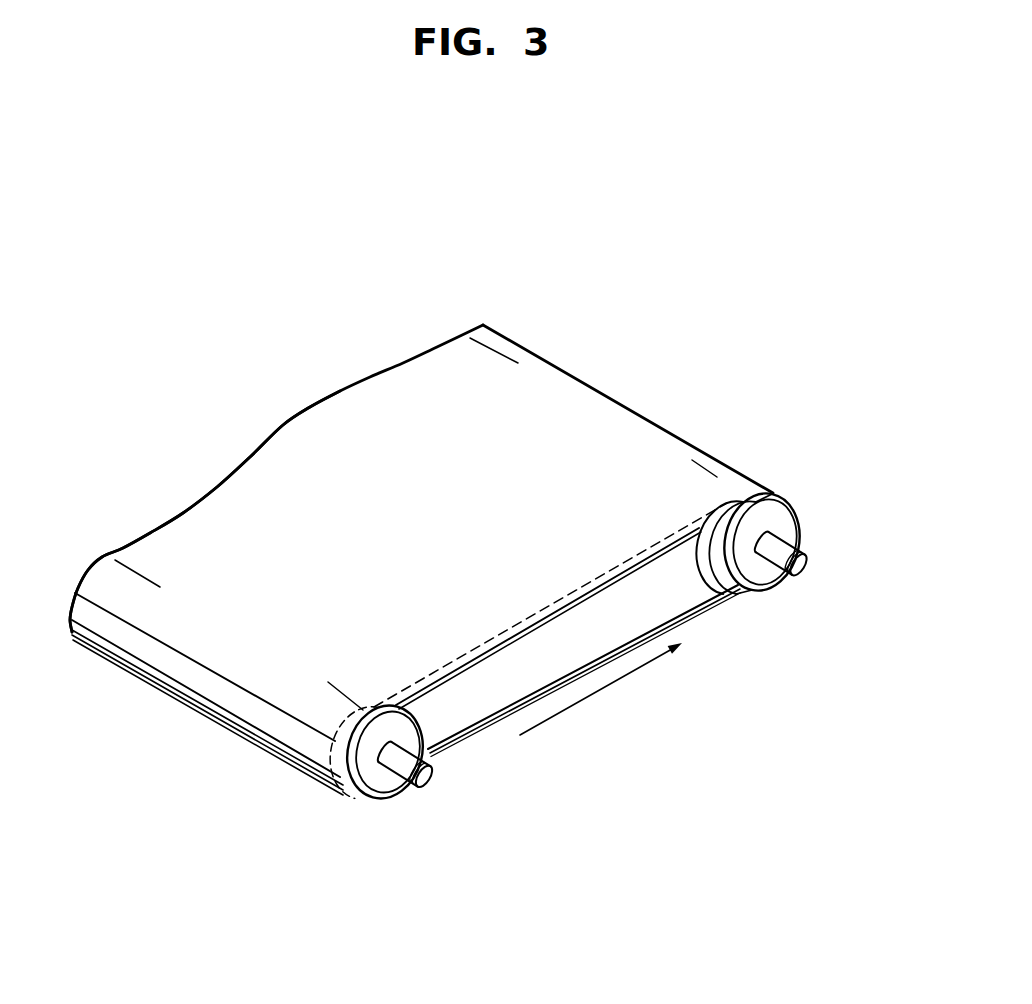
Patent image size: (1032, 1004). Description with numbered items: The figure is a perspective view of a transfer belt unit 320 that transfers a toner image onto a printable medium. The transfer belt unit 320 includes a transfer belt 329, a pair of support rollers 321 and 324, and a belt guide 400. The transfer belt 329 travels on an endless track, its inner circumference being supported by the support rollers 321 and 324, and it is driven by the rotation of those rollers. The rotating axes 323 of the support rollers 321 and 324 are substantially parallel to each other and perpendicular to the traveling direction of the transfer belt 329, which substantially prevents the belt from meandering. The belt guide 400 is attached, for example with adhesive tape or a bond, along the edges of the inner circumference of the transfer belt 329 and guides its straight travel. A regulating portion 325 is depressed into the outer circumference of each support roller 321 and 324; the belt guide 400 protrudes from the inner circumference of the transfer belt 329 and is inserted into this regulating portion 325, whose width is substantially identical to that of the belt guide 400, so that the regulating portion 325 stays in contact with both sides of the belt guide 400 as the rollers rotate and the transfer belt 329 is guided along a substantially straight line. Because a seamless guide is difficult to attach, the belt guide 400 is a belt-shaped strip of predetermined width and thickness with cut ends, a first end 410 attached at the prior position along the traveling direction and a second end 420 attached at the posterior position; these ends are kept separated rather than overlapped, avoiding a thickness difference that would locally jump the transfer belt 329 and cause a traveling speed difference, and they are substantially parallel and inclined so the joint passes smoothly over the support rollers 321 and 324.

The transfer belt unit 320 is at (600, 325).
The transfer belt 329 is at (443, 365).
The regulating portion 325 is at (723, 503).
The support roller 324 is at (785, 510).
The rotating axis 323 is at (808, 568).
The first end 410 is at (713, 603).
The second end 420 is at (683, 607).
The belt guide 400 is at (563, 690).
The support roller 321 is at (393, 790).